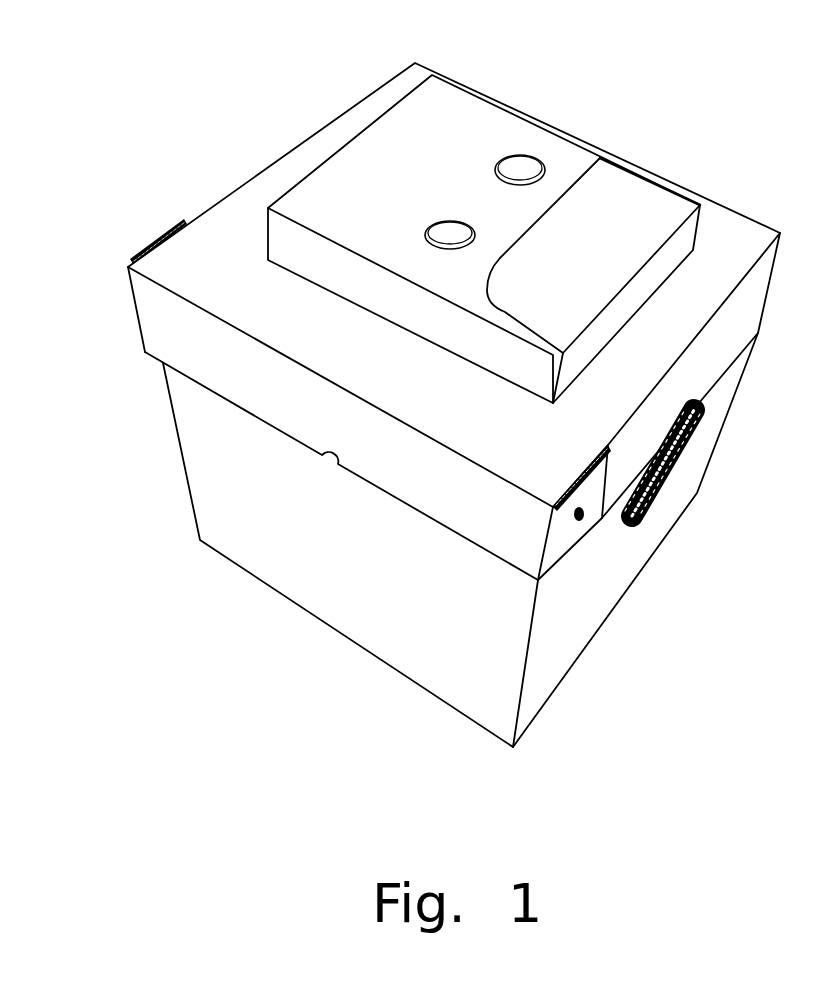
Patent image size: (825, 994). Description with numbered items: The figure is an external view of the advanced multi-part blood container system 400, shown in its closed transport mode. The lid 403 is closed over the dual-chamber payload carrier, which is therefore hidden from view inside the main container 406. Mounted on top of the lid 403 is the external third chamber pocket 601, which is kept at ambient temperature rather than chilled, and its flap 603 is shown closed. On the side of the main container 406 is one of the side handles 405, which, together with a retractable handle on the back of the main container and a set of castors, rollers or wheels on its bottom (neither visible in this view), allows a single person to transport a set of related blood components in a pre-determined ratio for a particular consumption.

The advanced multi-part blood container system 400 is at (480, 40).
The lid 403 is at (341, 354).
The side handles 405 is at (655, 502).
The main container 406 is at (350, 555).
The external third chamber pocket 601 is at (398, 186).
The flap 603 is at (550, 276).